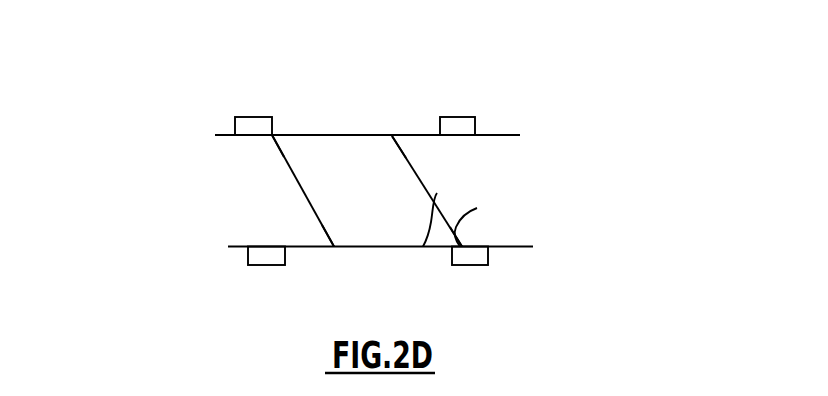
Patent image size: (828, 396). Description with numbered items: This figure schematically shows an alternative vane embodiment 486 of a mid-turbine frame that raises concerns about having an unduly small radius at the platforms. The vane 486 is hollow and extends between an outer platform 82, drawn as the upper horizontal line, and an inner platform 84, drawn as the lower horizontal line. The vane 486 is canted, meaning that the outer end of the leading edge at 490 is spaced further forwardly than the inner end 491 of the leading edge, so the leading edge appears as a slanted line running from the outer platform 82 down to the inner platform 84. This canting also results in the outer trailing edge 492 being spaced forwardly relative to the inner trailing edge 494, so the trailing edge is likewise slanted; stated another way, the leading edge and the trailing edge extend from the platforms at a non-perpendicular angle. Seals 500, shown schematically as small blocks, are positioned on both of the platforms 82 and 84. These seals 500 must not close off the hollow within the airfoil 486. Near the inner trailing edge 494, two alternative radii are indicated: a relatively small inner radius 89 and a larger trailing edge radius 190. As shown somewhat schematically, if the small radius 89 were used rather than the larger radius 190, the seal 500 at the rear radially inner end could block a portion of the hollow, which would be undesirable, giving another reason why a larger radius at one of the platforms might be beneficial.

The outer platform 82 is at (405, 135).
The inner platform 84 is at (241, 247).
The inner radius 89 is at (477, 208).
The trailing edge radius 190 is at (437, 193).
The vane 486 is at (348, 145).
The outer end of the leading edge 490 is at (270, 140).
The inner end of the leading edge 491 is at (330, 242).
The outer trailing edge 492 is at (393, 137).
The inner trailing edge 494 is at (466, 246).
The seals 500 is at (253, 122).